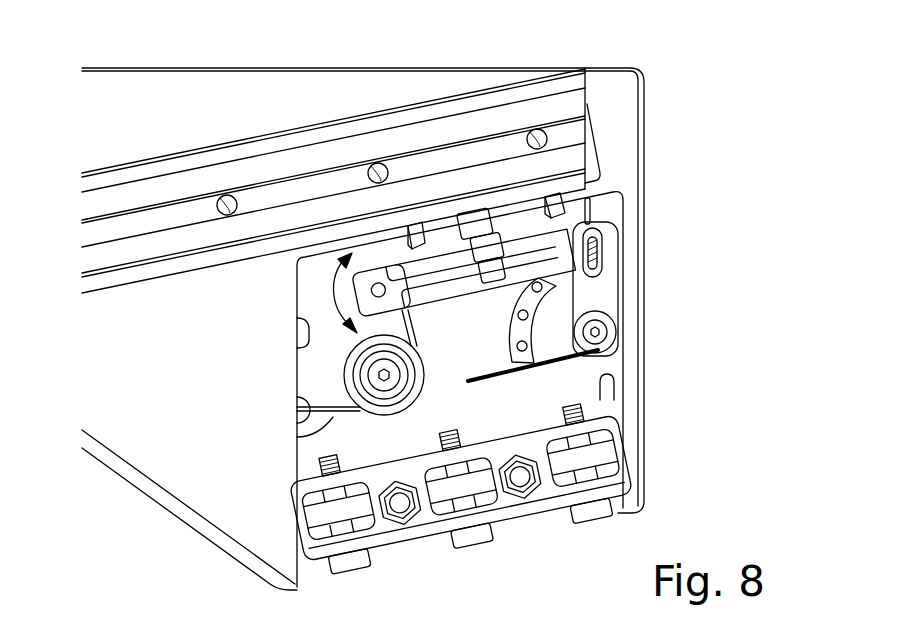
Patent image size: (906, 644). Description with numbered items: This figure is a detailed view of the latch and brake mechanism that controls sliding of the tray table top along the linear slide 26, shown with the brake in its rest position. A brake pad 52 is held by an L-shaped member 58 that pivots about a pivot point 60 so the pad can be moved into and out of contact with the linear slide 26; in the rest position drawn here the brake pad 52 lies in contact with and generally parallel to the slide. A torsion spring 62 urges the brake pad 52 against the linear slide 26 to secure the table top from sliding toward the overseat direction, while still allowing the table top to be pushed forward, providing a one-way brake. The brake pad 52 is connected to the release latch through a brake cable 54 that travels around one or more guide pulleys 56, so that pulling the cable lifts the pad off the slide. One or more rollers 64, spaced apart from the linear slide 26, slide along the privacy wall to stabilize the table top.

The linear slide 26 is at (570, 105).
The brake pad 52 is at (583, 196).
The brake cable 54 is at (297, 441).
The guide pulley 56 is at (352, 362).
The L-shaped member 58 is at (603, 298).
The pivot point 60 is at (600, 333).
The torsion spring 62 is at (590, 212).
The rollers 64 is at (565, 473).